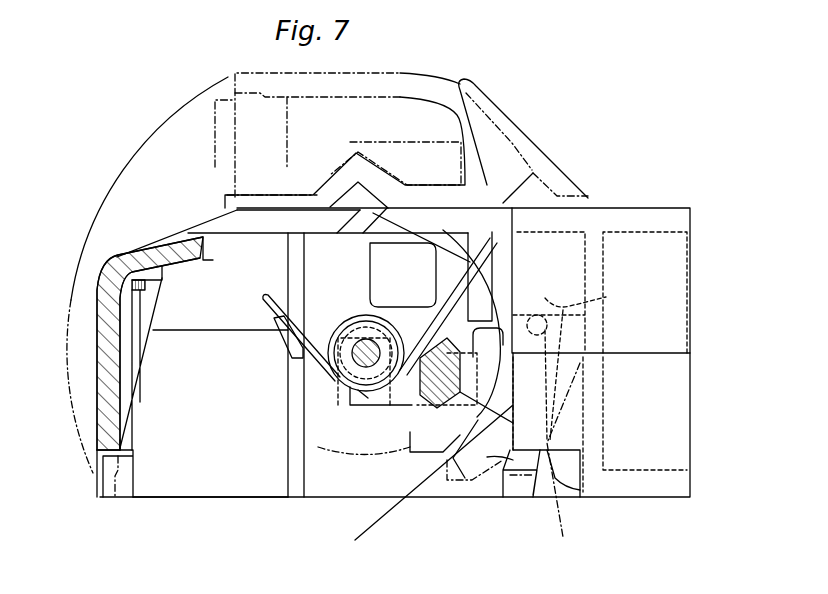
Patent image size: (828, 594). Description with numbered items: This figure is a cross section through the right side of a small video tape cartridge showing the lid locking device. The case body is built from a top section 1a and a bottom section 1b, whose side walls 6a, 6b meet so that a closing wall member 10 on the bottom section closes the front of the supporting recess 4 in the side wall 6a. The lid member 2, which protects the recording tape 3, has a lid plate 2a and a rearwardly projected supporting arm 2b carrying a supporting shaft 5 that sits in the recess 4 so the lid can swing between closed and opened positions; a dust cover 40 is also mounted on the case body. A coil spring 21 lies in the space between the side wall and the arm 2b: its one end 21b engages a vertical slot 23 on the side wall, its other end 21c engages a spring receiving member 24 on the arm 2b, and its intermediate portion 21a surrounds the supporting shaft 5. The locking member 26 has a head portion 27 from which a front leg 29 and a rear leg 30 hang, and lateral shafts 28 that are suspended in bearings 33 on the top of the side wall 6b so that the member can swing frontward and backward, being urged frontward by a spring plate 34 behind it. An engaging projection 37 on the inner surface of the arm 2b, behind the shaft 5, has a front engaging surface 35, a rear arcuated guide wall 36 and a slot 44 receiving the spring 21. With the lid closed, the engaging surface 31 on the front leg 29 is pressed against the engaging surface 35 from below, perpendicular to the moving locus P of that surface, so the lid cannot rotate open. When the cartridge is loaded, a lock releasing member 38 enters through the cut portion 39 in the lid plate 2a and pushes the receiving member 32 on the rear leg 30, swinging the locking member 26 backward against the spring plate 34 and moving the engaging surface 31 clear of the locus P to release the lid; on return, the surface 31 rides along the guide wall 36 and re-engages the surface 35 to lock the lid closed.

The top section 1a is at (675, 253).
The bottom section 1b is at (678, 413).
The lid member 2 is at (110, 268).
The lid plate 2a is at (106, 345).
The supporting arms 2b is at (427, 498).
The recording tape 3 is at (143, 315).
The supporting recess 4 is at (352, 330).
The supporting shaft 5 is at (377, 332).
The side wall of the top section 6a is at (258, 248).
The side wall of the bottom section 6b is at (187, 480).
The closing wall member 10 is at (327, 333).
The coil spring 21 is at (343, 388).
The intermediate portion of the coil spring 21a is at (367, 400).
The one end of the coil spring 21b is at (453, 247).
The another end of the coil spring 21c is at (270, 300).
The vertical slot 23 is at (480, 205).
The spring receiving member 24 is at (280, 348).
The locking member 26 is at (558, 490).
The head portion 27 is at (594, 294).
The lateral shafts 28 is at (540, 318).
The front leg 29 is at (421, 483).
The rear leg 30 is at (498, 483).
The engaging surface 31 is at (484, 450).
The receiving member 32 is at (497, 497).
The bearings 33 is at (535, 316).
The spring plate 34 is at (573, 415).
The engaging surface 35 is at (437, 445).
The arcuated guide wall 36 is at (453, 400).
The engaging projection 37 is at (403, 410).
The lock releasing member 38 is at (490, 508).
The cut portion 39 is at (97, 486).
The dust cover 40 is at (228, 222).
The slot 44 is at (440, 330).
The moving locus P is at (350, 458).